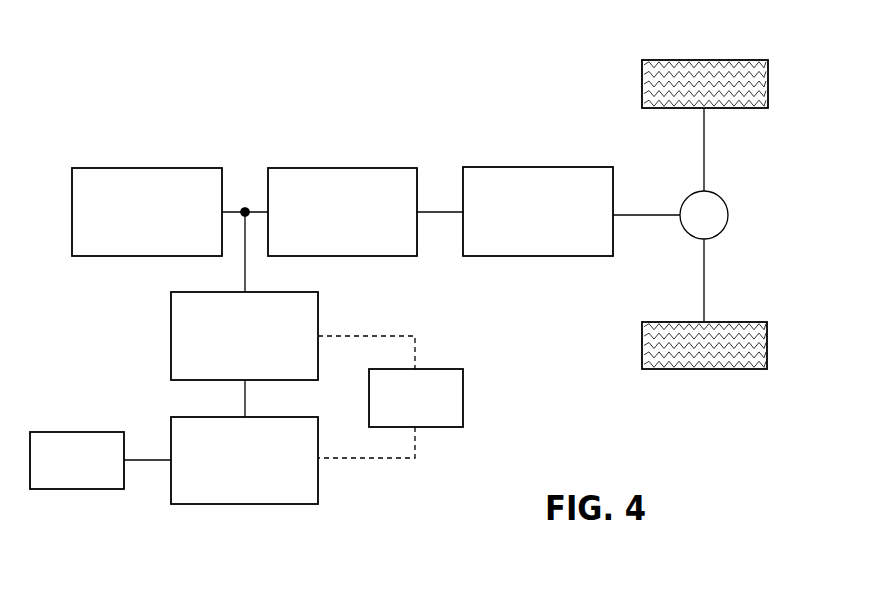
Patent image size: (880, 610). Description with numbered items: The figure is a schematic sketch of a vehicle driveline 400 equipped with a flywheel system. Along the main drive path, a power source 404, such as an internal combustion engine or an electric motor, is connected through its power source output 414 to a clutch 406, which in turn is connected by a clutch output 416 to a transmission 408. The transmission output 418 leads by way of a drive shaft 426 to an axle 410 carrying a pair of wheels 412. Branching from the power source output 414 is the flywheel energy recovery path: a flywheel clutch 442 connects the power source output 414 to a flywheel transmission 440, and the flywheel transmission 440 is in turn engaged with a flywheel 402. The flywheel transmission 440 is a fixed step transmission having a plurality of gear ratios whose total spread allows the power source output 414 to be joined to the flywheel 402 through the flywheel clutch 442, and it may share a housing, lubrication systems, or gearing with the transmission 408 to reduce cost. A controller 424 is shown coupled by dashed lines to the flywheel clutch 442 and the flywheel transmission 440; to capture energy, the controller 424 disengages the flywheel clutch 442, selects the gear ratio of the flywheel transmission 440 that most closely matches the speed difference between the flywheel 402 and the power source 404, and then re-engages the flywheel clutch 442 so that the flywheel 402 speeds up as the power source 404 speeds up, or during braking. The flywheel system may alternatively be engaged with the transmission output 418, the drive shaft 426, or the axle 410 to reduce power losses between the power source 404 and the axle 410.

The vehicle driveline 400 is at (137, 118).
The flywheel 402 is at (78, 432).
The power source 404 is at (197, 168).
The clutch 406 is at (340, 168).
The transmission 408 is at (536, 167).
The axle 410 is at (704, 289).
The wheels 412 is at (704, 60).
The power source output 414 is at (233, 207).
The clutch output 416 is at (438, 210).
The transmission output 418 is at (628, 219).
The controller 424 is at (463, 397).
The drive shaft 426 is at (655, 213).
The flywheel transmission 440 is at (318, 486).
The flywheel clutch 442 is at (318, 305).